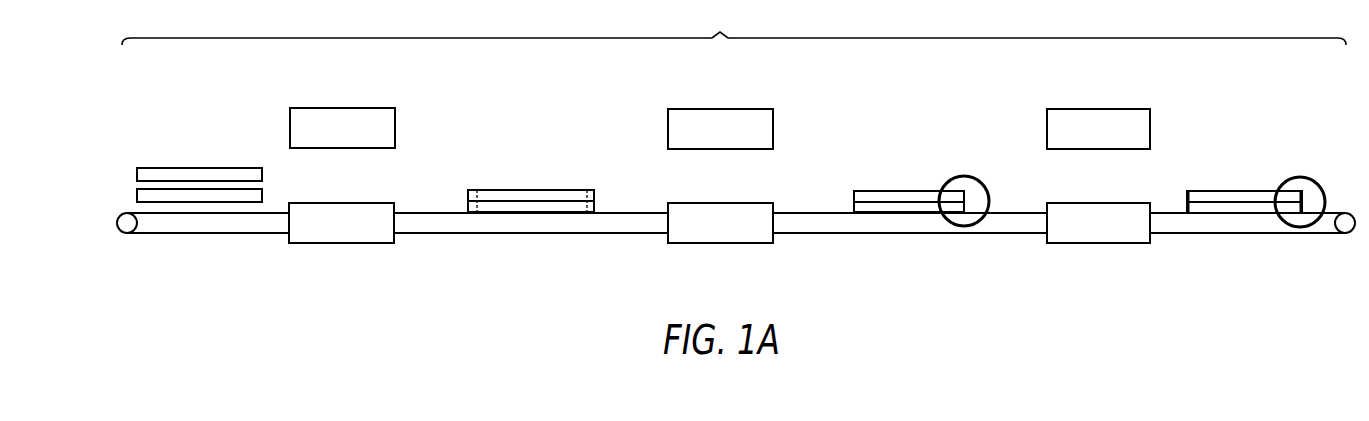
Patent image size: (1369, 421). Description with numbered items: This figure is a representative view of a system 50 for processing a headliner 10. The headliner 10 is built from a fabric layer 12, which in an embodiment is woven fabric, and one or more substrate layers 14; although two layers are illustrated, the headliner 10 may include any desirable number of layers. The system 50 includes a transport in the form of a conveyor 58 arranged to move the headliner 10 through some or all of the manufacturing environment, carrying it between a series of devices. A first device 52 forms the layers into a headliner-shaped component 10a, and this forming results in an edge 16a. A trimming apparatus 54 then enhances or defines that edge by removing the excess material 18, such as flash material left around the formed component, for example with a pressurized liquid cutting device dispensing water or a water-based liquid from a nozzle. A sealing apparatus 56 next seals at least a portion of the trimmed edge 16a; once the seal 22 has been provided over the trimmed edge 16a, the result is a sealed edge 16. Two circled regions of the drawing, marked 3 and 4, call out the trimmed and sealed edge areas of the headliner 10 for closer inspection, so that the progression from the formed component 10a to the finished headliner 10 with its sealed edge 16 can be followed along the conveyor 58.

The system for processing the headliner 50 is at (734, 26).
The first device 52 is at (300, 104).
The trimming apparatus 54 is at (677, 104).
The sealing apparatus 56 is at (1053, 104).
The conveyor 58 is at (640, 228).
The headliner 10 is at (1270, 120).
The headliner-shaped component 10a is at (551, 121).
The fabric layer 12 is at (137, 194).
The substrate layer 14 is at (137, 172).
The sealed edge 16 is at (478, 197).
The trimmed edge 16a is at (847, 198).
The excess material 18 is at (468, 187).
The seal 22 is at (1190, 188).
The detail circle for FIG. 3 is at (975, 223).
The detail circle for FIG. 4 is at (1283, 223).